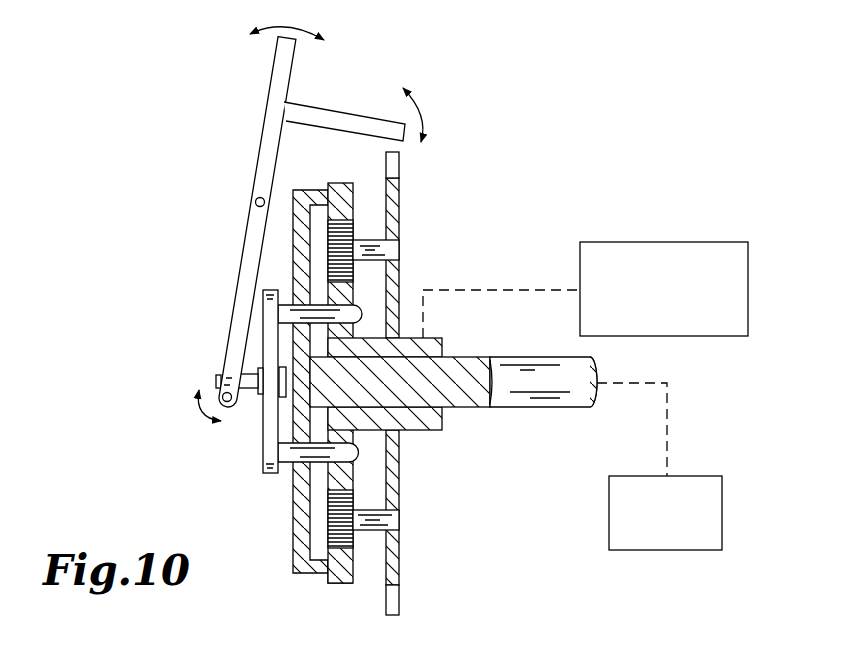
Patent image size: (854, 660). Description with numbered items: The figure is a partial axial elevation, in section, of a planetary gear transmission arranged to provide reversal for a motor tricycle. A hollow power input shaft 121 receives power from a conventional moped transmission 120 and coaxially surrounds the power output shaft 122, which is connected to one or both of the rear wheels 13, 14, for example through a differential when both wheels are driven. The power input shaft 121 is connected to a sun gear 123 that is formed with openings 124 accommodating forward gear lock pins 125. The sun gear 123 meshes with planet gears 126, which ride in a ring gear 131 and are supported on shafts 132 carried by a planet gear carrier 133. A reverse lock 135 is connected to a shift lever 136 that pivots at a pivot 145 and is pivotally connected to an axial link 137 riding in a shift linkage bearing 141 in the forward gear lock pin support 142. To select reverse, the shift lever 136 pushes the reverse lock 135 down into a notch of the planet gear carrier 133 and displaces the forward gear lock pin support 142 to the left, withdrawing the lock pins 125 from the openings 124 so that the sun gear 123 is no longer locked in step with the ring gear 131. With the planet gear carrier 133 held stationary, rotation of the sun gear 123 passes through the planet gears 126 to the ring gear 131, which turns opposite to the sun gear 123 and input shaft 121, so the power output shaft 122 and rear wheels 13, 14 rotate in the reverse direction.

The left rear wheel 13 is at (683, 496).
The right rear wheel 14 is at (695, 476).
The moped transmission 120 is at (714, 242).
The power input shaft 121 is at (443, 420).
The power output shaft 122 is at (537, 388).
The sun gear 123 is at (345, 479).
The opening 124 is at (345, 440).
The forward gear lock pin 125 is at (320, 454).
The planet gear 126 is at (338, 509).
The ring gear 131 is at (338, 572).
The shaft 132 is at (372, 533).
The planet gear carrier 133 is at (400, 570).
The reverse lock 135 is at (361, 121).
The shift lever 136 is at (248, 243).
The axial link 137 is at (245, 380).
The shift linkage bearing 141 is at (261, 396).
The forward gear lock pin support 142 is at (267, 313).
The pivot 145 is at (244, 199).